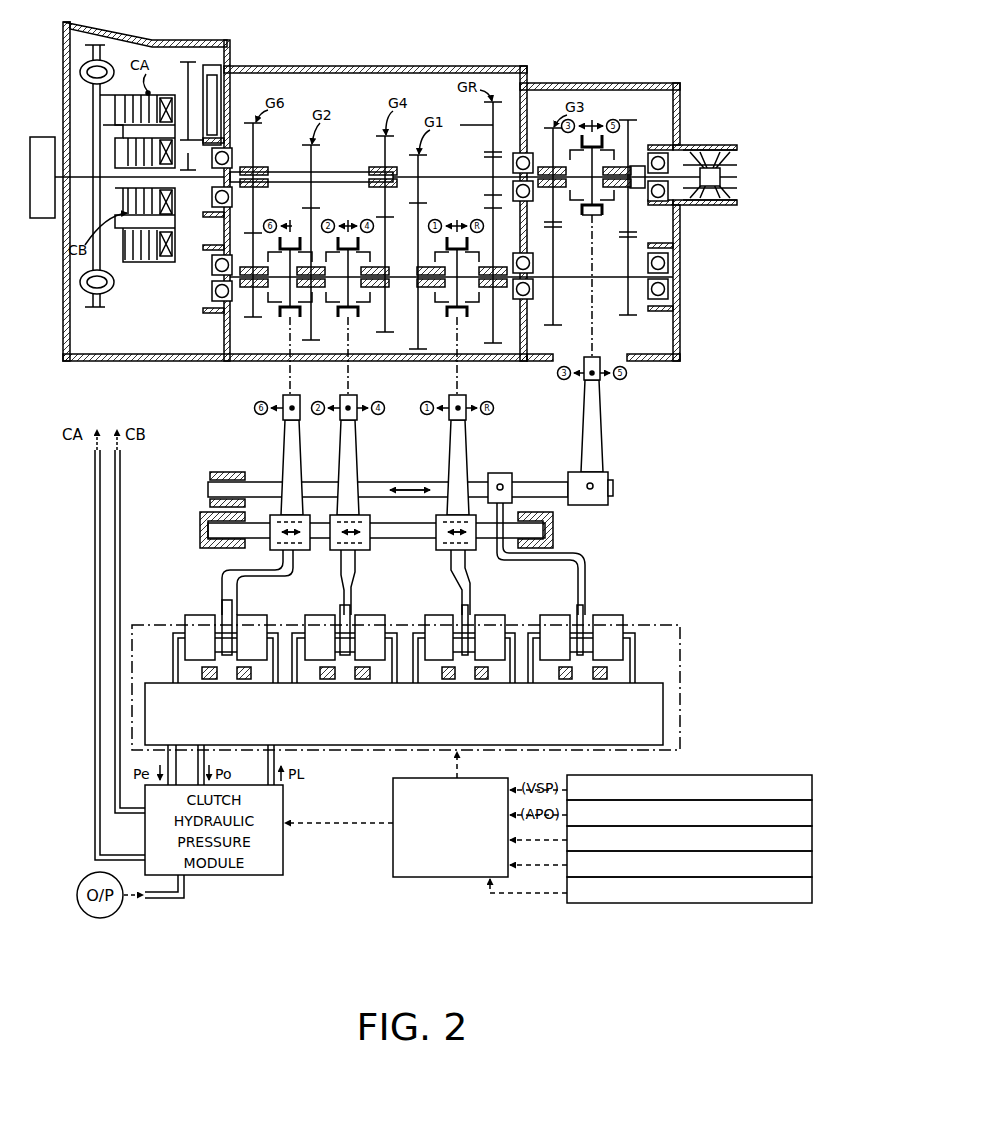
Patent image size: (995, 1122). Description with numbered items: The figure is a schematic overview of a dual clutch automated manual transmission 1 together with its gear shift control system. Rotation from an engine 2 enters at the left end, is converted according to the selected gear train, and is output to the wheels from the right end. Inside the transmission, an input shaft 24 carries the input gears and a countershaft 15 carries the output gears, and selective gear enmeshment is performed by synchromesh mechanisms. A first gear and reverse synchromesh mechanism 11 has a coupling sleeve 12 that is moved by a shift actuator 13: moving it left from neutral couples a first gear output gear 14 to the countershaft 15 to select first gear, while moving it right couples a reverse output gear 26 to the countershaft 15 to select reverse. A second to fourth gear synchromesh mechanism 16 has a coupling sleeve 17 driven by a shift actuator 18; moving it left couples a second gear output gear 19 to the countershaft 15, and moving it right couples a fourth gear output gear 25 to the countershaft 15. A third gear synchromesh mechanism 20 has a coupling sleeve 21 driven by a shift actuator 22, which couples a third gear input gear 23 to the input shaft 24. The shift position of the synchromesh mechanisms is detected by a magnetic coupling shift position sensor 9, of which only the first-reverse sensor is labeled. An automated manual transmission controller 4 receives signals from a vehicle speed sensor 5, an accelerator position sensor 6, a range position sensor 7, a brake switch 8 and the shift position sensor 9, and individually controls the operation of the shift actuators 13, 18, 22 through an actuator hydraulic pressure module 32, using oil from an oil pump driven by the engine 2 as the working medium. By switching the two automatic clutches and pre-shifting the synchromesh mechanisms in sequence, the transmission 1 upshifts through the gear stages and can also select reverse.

The automated manual transmission 1 is at (456, 66).
The engine 2 is at (43, 137).
The automated manual transmission controller 4 is at (393, 791).
The vehicle speed sensor 5 is at (812, 788).
The accelerator position sensor 6 is at (812, 813).
The range position sensor 7 is at (812, 838).
The brake switch 8 is at (812, 864).
The shift position sensor 9 is at (483, 680).
The first gear/reverse synchromesh mechanism 11 is at (469, 333).
The coupling sleeve 12 is at (455, 325).
The shift actuator 13 is at (508, 622).
The first gear output gear 14 is at (418, 352).
The countershaft 15 is at (606, 278).
The second to fourth gear synchromesh mechanism 16 is at (362, 325).
The coupling sleeve 17 is at (345, 330).
The shift actuator 18 is at (386, 620).
The second gear output gear 19 is at (296, 347).
The third gear synchromesh mechanism 20 is at (597, 220).
The coupling sleeve 21 is at (585, 218).
The shift actuator 22 is at (608, 618).
The third gear input gear 23 is at (552, 128).
The input shaft 24 is at (446, 176).
The fourth gear output gear 25 is at (387, 333).
The reverse output gear 26 is at (497, 345).
The actuator hydraulic pressure module 32 is at (663, 710).